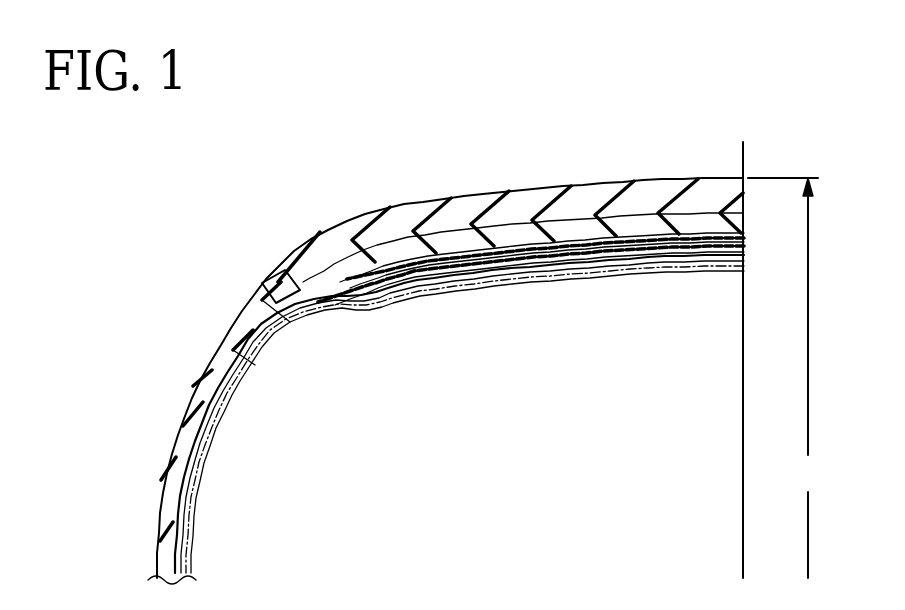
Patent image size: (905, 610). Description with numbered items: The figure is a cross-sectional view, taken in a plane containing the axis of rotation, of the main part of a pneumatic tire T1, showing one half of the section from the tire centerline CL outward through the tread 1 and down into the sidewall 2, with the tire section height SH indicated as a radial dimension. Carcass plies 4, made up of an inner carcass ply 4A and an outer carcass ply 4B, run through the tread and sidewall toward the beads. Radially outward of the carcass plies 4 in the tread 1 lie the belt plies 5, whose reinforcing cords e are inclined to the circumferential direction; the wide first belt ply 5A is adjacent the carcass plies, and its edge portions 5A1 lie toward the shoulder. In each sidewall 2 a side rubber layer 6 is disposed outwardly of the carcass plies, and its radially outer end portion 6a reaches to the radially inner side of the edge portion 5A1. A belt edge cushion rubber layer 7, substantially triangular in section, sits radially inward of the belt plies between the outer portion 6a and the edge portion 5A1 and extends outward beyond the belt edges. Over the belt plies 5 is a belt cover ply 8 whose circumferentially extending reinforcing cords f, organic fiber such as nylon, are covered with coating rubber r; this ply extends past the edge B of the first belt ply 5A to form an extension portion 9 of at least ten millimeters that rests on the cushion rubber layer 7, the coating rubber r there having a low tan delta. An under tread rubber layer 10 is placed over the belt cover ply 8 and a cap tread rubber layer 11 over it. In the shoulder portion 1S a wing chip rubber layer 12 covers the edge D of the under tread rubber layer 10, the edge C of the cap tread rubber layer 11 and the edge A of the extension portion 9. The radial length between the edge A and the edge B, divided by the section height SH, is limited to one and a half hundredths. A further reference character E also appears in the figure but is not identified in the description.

The tread 1 is at (627, 177).
The shoulder portion 1S is at (322, 228).
The sidewall 2 is at (152, 507).
The carcass plies 4 is at (193, 400).
The inner carcass ply 4A is at (208, 428).
The outer carcass ply 4B is at (235, 352).
The belt plies 5 is at (521, 240).
The first belt ply 5A is at (606, 254).
The edge portions 5A1 is at (378, 297).
The side rubber layer 6 is at (178, 460).
The radially outer end portions 6a is at (293, 322).
The belt edge cushion rubber layers 7 is at (320, 305).
The belt cover ply 8 is at (572, 235).
The extension portions 9 is at (265, 293).
The under tread rubber layer 10 is at (708, 225).
The cap tread rubber layer 11 is at (712, 186).
The wing chip rubber layer 12 is at (265, 275).
The edge of extension portion A is at (265, 337).
The edge of first belt ply B is at (279, 280).
The edge of cap tread rubber layer C is at (278, 280).
The edge of under tread rubber layer D is at (262, 298).
The point E is at (205, 378).
The reinforcing cords e is at (465, 280).
The reinforcing cords f is at (438, 258).
The coating rubber r is at (468, 258).
The pneumatic tire T1 is at (598, 140).
The tire centerline CL is at (746, 342).
The tire section height SH is at (792, 378).